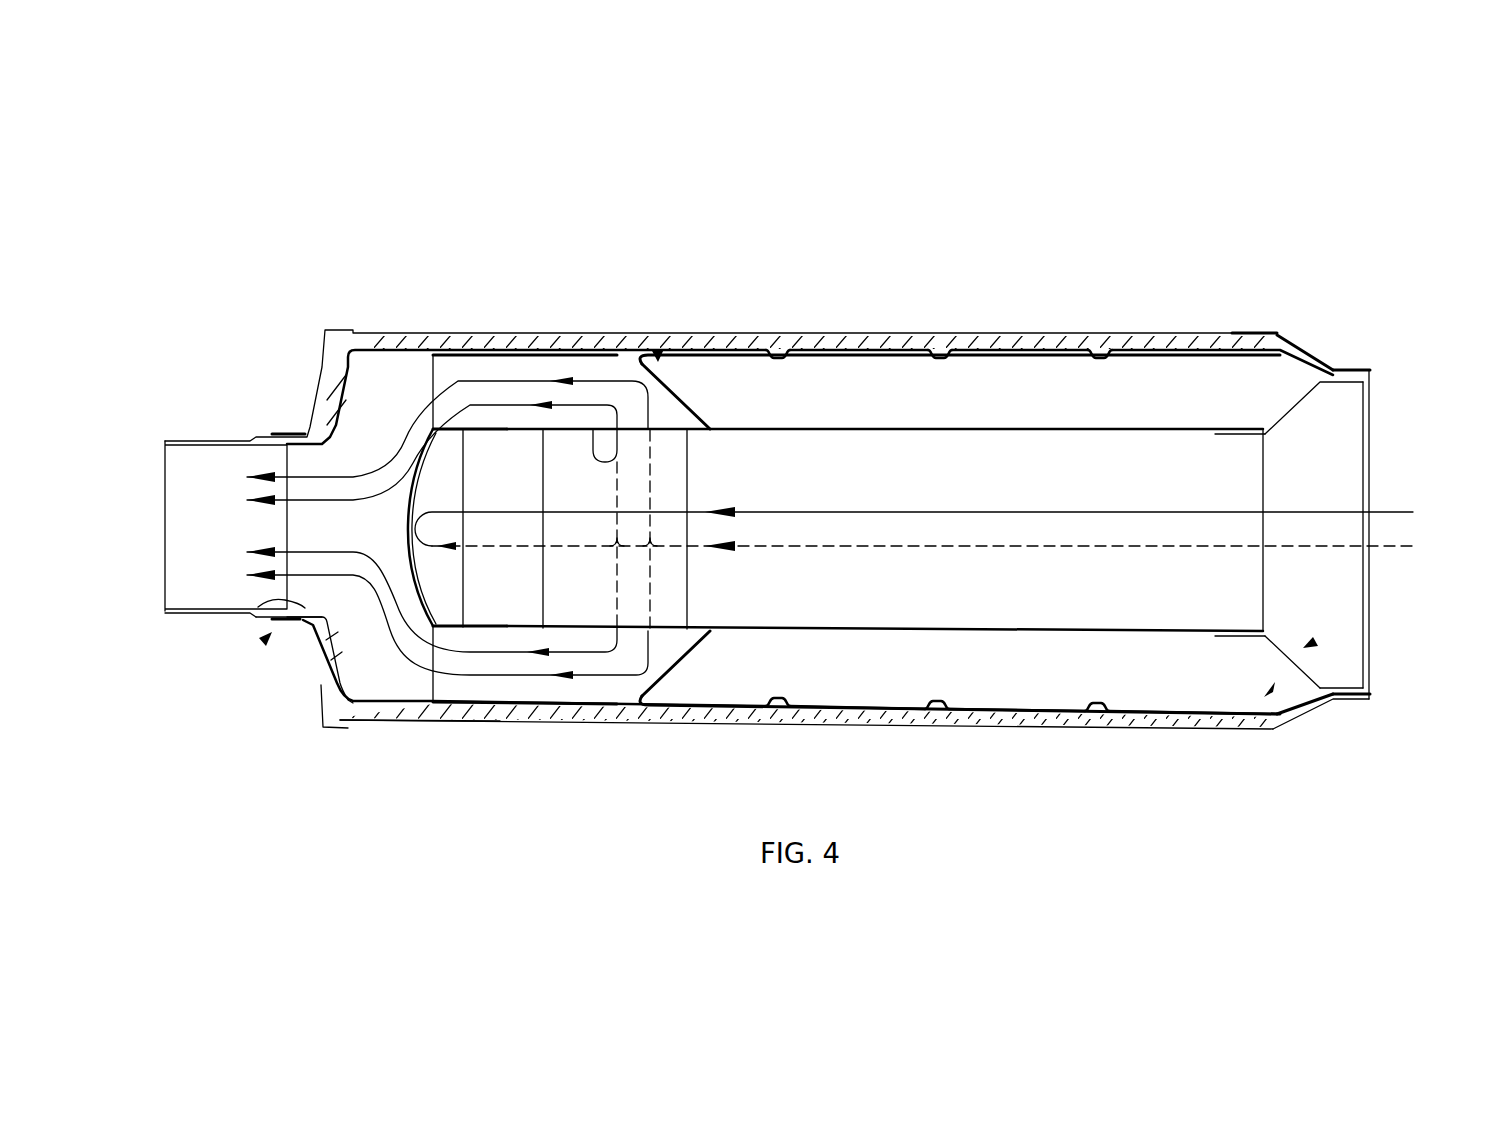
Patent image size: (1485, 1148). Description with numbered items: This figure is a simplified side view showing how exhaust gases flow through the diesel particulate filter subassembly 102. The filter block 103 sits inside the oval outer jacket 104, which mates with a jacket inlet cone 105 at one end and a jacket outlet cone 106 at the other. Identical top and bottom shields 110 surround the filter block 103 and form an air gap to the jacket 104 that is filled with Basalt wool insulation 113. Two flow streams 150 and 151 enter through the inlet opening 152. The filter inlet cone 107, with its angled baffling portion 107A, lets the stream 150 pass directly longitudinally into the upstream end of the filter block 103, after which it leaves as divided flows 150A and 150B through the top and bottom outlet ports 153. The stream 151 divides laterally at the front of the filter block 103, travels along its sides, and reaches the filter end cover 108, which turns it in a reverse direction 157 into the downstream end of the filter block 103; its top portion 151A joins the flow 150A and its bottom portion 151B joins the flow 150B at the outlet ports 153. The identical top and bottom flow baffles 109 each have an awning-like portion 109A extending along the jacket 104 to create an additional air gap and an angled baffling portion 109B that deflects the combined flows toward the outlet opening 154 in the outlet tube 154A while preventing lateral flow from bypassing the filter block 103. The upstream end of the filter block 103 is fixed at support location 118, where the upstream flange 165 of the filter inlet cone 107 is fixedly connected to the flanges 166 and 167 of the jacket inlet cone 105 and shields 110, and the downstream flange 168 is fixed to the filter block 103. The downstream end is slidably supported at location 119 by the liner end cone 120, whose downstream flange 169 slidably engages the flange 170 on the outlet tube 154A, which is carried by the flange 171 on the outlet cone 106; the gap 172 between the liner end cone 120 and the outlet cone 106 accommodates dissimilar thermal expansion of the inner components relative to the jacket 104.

The diesel particulate filter subassembly 102 is at (1038, 224).
The filter block 103 is at (1020, 612).
The outer jacket 104 is at (943, 725).
The jacket inlet cone 105 is at (1317, 705).
The jacket outlet cone 106 is at (325, 728).
The filter inlet cone 107 is at (1308, 645).
The angled baffling portion of filter inlet cone 107A is at (1307, 680).
The filter end cover 108 is at (420, 457).
The flow baffle 109 is at (657, 348).
The awning-like portion 109A is at (510, 364).
The angled baffling portion 109B is at (687, 356).
The top and bottom shields 110 is at (980, 355).
The Basalt wool insulation 113 is at (750, 713).
The fixed support location 118 is at (1270, 690).
The slip-permitting support location 119 is at (266, 638).
The liner end cone 120 is at (327, 685).
The first exhaust flow stream 150 is at (1397, 552).
The top divided flow 150A is at (655, 465).
The bottom divided flow 150B is at (655, 583).
The second exhaust flow stream 151 is at (443, 517).
The top portion of divided flow 151A is at (597, 460).
The bottom portion of divided flow 151B is at (617, 590).
The inlet opening 152 is at (1340, 447).
The outlet port 153 is at (706, 429).
The outlet opening 154 is at (192, 463).
The outlet tube 154A is at (227, 438).
The reverse direction flow 157 is at (313, 628).
The upstream flange of filter inlet cone 165 is at (1333, 680).
The upstream flange of jacket inlet cone 166 is at (1357, 673).
The upstream flange of shields 167 is at (1358, 693).
The downstream flange of filter inlet cone 168 is at (1227, 640).
The downstream flange of liner end cone 169 is at (268, 602).
The outlet tube flange 170 is at (270, 618).
The outlet cone flange 171 is at (275, 623).
The gap 172 is at (322, 717).